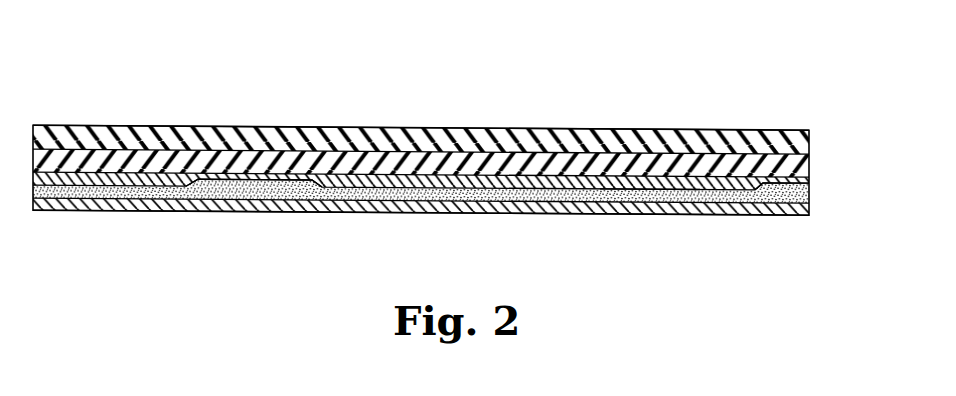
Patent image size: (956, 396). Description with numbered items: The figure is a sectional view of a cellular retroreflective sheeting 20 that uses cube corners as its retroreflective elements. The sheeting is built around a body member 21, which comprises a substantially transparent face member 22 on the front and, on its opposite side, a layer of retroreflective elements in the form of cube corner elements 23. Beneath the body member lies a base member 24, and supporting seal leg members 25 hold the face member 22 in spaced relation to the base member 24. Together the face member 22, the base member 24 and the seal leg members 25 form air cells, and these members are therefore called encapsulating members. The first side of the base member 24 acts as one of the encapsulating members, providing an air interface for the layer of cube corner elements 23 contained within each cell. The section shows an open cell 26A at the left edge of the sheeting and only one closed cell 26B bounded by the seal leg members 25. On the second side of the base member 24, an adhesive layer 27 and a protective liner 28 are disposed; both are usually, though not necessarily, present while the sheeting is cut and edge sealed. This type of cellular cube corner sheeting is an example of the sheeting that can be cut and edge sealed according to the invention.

The cellular retroreflective sheeting 20 is at (448, 152).
The body member 21 is at (421, 163).
The face member 22 is at (421, 139).
The cube corner elements 23 is at (421, 181).
The base member 24 is at (642, 187).
The seal leg members 25 is at (287, 170).
The open cell 26A is at (118, 156).
The closed cell 26B is at (589, 155).
The adhesive layer 27 is at (421, 190).
The protective liner 28 is at (421, 206).